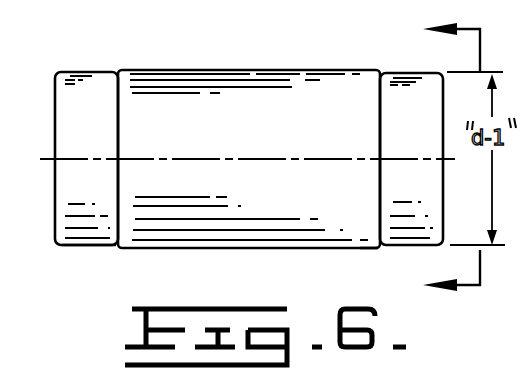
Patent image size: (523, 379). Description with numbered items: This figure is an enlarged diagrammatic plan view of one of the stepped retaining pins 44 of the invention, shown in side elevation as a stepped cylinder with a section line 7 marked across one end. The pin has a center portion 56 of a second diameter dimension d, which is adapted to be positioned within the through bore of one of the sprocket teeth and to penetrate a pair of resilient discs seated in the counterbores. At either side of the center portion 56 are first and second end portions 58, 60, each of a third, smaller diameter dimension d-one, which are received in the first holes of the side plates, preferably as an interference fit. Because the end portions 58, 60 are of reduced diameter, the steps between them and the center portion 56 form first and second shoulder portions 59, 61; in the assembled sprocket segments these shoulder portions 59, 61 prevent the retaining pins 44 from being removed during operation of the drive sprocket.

The stepped retaining pin 44 is at (313, 139).
The center portion 56 is at (197, 70).
The first end portion 58 is at (408, 72).
The first shoulder portion 59 is at (383, 249).
The second end portion 60 is at (89, 247).
The second shoulder portion 61 is at (117, 70).
The section line 7- 7 is at (463, 158).